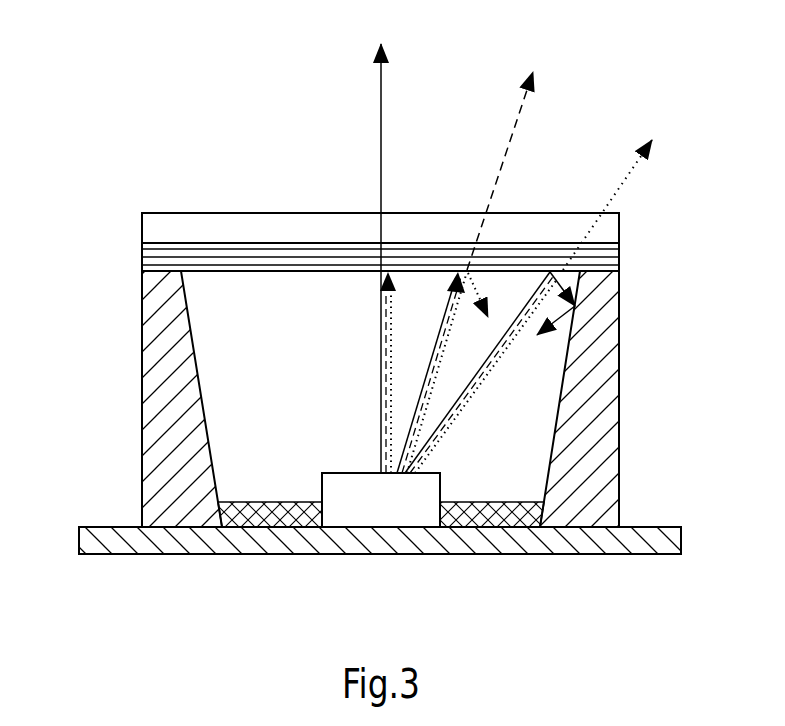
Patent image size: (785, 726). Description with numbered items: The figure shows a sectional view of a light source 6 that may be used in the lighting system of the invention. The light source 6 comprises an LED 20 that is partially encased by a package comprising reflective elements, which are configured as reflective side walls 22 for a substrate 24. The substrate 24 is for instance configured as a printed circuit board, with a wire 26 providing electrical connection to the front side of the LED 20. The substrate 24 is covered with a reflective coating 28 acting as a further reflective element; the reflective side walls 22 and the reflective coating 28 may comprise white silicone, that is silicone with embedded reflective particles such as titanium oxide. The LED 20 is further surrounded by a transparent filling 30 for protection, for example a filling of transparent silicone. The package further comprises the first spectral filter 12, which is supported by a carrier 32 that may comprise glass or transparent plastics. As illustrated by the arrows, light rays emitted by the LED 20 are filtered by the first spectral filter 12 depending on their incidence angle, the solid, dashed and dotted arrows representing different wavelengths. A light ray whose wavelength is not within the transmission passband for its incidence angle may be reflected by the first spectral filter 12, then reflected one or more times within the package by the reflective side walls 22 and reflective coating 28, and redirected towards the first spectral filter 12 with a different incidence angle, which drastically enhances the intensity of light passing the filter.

The light source 6 is at (97, 86).
The first spectral filter 12 is at (608, 262).
The carrier 32 is at (608, 228).
The reflective side walls 22 is at (152, 402).
The substrate 24 is at (672, 540).
The LED 20 is at (380, 507).
The reflective coating 28 is at (495, 517).
The transparent filling 30 is at (285, 432).
The wire 26 is at (437, 472).